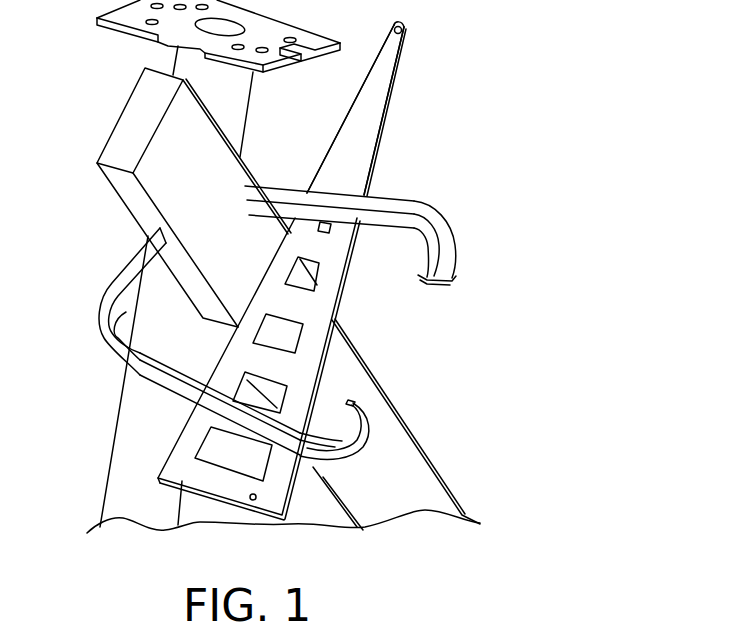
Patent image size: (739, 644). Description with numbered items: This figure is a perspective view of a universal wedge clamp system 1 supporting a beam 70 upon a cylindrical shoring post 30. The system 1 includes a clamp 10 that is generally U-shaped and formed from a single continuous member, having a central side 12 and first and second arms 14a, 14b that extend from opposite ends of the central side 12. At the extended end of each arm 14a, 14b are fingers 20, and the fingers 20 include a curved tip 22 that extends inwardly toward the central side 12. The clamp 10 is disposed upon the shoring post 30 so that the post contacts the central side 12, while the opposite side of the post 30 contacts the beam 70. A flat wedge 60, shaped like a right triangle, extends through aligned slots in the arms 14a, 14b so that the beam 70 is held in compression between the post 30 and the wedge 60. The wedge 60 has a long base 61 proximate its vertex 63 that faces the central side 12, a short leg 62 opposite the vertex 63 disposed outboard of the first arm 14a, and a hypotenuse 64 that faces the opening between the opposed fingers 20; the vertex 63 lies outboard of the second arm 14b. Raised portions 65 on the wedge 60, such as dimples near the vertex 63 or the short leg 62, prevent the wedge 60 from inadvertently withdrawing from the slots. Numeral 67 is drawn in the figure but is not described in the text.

The universal wedge clamp system 1 is at (528, 166).
The clamp 10 is at (133, 355).
The central side 12 is at (113, 281).
The first arm 14a is at (173, 378).
The second arm 14b is at (375, 214).
The fingers 20 is at (455, 254).
The tip 22 is at (426, 282).
The shoring post 30 is at (190, 65).
The wedge 60 is at (360, 147).
The base 61 is at (318, 172).
The short leg 62 is at (218, 452).
The vertex 63 is at (396, 46).
The hypotenuse 64 is at (358, 359).
The raised portion 65 is at (253, 501).
The bracket lower edge 67 is at (188, 492).
The beam 70 is at (323, 501).